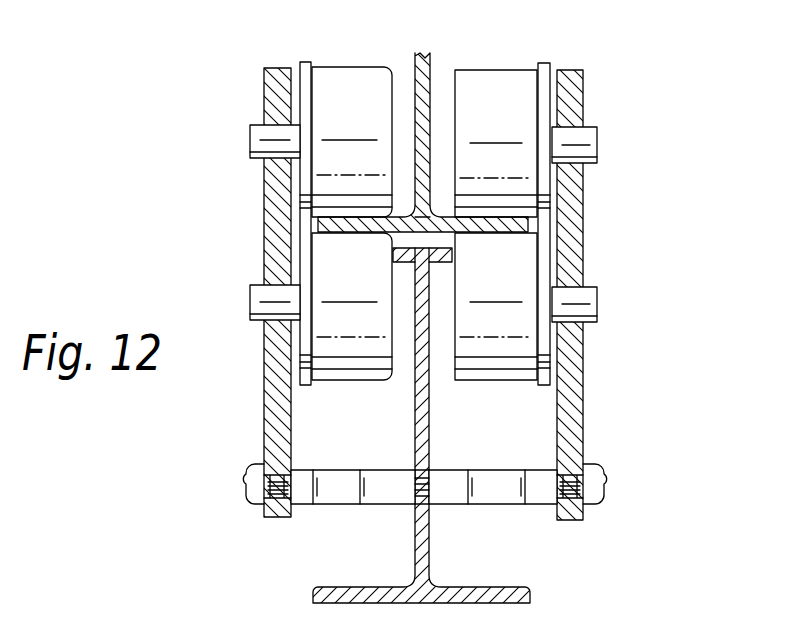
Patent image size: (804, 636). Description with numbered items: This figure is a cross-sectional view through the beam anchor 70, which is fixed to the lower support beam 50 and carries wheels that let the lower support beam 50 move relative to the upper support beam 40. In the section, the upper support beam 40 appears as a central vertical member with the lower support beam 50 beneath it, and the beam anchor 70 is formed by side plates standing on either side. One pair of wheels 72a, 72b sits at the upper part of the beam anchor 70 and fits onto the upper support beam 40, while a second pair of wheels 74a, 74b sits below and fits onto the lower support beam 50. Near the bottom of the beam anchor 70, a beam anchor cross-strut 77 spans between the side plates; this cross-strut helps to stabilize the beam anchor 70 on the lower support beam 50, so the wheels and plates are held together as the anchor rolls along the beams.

The beam anchor 70 is at (583, 225).
The wheel 72a is at (522, 104).
The wheel 72b is at (337, 91).
The wheel 74a is at (515, 280).
The wheel 74b is at (337, 256).
The upper support beam 40 is at (412, 107).
The lower support beam 50 is at (430, 543).
The beam anchor cross-strut 77 is at (452, 470).